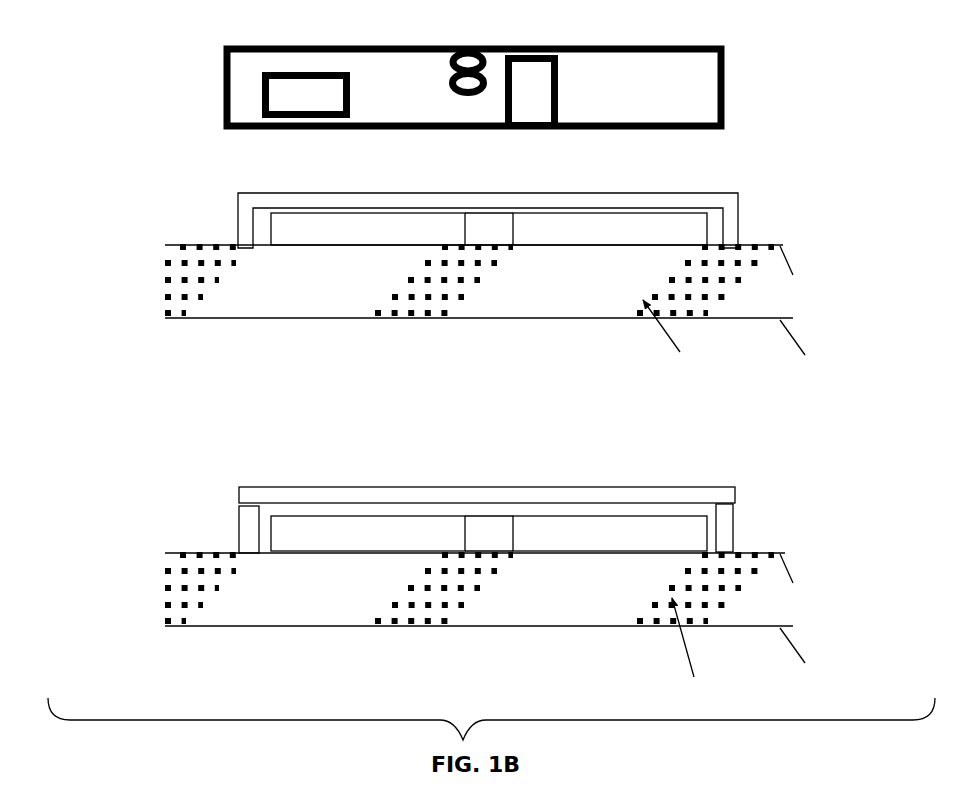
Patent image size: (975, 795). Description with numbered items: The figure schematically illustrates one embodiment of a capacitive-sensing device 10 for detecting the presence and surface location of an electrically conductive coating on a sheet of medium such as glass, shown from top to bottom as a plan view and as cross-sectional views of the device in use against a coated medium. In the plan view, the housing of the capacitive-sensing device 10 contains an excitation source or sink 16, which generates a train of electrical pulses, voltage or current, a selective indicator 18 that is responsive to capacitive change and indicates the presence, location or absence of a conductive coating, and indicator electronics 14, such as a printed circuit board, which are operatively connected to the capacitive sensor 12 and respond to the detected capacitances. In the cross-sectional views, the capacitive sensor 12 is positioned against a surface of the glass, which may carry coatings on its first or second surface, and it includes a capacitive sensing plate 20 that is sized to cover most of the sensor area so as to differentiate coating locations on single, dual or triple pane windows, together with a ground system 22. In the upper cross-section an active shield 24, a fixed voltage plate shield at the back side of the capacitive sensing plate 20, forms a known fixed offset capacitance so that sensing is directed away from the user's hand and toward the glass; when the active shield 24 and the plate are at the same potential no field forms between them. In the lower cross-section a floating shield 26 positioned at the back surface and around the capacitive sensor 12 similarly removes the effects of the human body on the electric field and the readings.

The capacitive-sensing device 10 is at (158, 203).
The capacitive sensor 12 is at (525, 423).
The indicator electronics 14 is at (535, 88).
The excitation source or sink 16 is at (292, 88).
The selective indicator 18 is at (480, 67).
The capacitive sensing plate 20 is at (266, 653).
The ground system 22 is at (575, 230).
The active shield 24 is at (305, 193).
The floating shield 26 is at (358, 486).